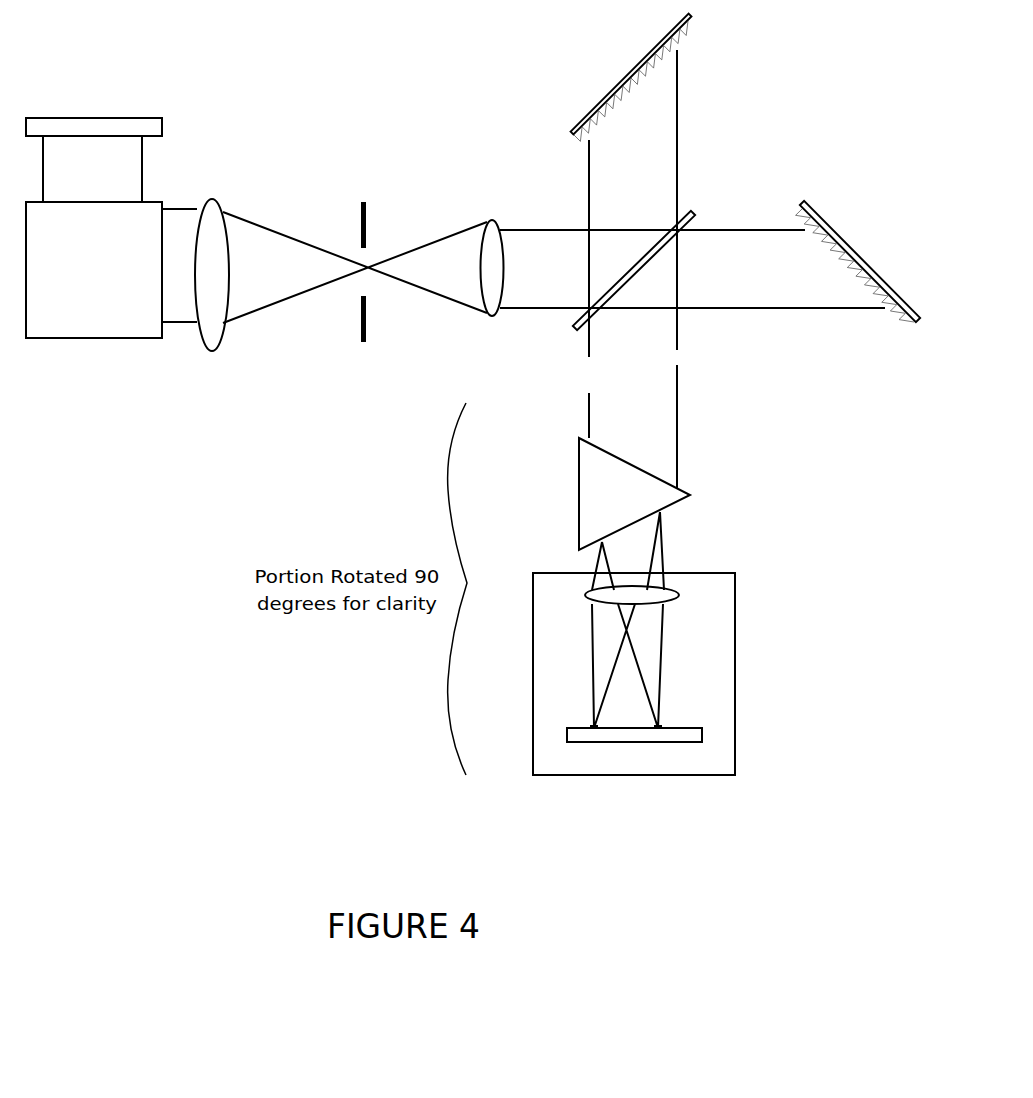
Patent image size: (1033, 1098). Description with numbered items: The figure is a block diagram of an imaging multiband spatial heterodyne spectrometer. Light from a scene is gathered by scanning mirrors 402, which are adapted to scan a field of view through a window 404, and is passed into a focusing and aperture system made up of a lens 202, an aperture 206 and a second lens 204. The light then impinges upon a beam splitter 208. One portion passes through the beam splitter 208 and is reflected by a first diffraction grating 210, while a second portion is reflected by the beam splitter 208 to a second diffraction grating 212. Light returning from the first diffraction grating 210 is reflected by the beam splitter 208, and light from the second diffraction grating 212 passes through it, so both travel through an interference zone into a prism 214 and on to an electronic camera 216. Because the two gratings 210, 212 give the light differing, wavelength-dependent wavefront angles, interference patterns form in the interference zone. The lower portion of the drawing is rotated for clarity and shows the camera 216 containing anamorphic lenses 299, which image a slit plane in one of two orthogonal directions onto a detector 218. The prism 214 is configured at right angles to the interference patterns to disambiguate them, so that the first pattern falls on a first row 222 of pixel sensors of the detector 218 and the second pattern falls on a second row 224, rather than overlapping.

The window 404 is at (138, 125).
The scanning mirrors 402 is at (111, 270).
The lens 202 is at (180, 207).
The aperture 206 is at (367, 213).
The lens 204 is at (488, 233).
The beam splitter 208 is at (695, 217).
The second diffraction grating 212 is at (693, 15).
The first diffraction grating 210 is at (820, 223).
The prism 214 is at (667, 497).
The electronic camera 216 is at (727, 623).
The anamorphic lenses 299 is at (677, 588).
The detector 218 is at (568, 733).
The first row of pixel sensors 222 is at (593, 727).
The second row of pixel sensors 224 is at (662, 727).